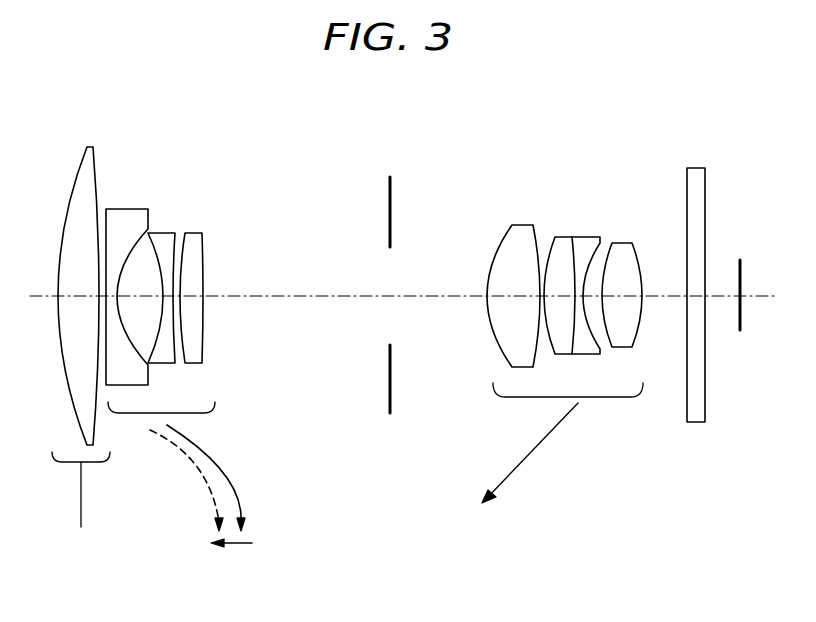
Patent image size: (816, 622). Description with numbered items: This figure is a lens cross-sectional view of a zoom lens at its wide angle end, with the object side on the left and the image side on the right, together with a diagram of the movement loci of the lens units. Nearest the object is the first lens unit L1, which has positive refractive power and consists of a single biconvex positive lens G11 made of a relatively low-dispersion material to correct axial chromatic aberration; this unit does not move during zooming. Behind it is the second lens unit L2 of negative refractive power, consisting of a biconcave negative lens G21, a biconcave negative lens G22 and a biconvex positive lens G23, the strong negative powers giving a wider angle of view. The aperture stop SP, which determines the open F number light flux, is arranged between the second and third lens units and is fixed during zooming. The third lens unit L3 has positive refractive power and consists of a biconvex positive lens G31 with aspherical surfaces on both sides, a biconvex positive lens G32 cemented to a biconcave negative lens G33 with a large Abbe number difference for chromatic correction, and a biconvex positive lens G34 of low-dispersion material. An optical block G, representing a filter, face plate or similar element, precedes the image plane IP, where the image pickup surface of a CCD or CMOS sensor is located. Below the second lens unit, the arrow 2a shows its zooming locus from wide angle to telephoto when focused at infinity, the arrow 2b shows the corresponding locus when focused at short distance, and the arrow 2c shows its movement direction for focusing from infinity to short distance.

The first lens unit L1 is at (58, 100).
The biconvex positive lens G11 is at (86, 147).
The second lens unit L2 is at (108, 132).
The biconcave negative lens G21 is at (122, 222).
The biconcave negative lens G22 is at (166, 238).
The biconvex positive lens G23 is at (194, 240).
The arrow 2a is at (224, 475).
The arrow 2b is at (197, 468).
The arrow 2c is at (238, 547).
The aperture stop SP is at (390, 187).
The third lens unit L3 is at (468, 125).
The biconvex positive lens G31 is at (520, 233).
The biconvex positive lens G32 is at (562, 245).
The biconcave negative lens G33 is at (582, 247).
The biconvex positive lens G34 is at (620, 252).
The optical block G is at (697, 175).
The image plane IP is at (741, 262).